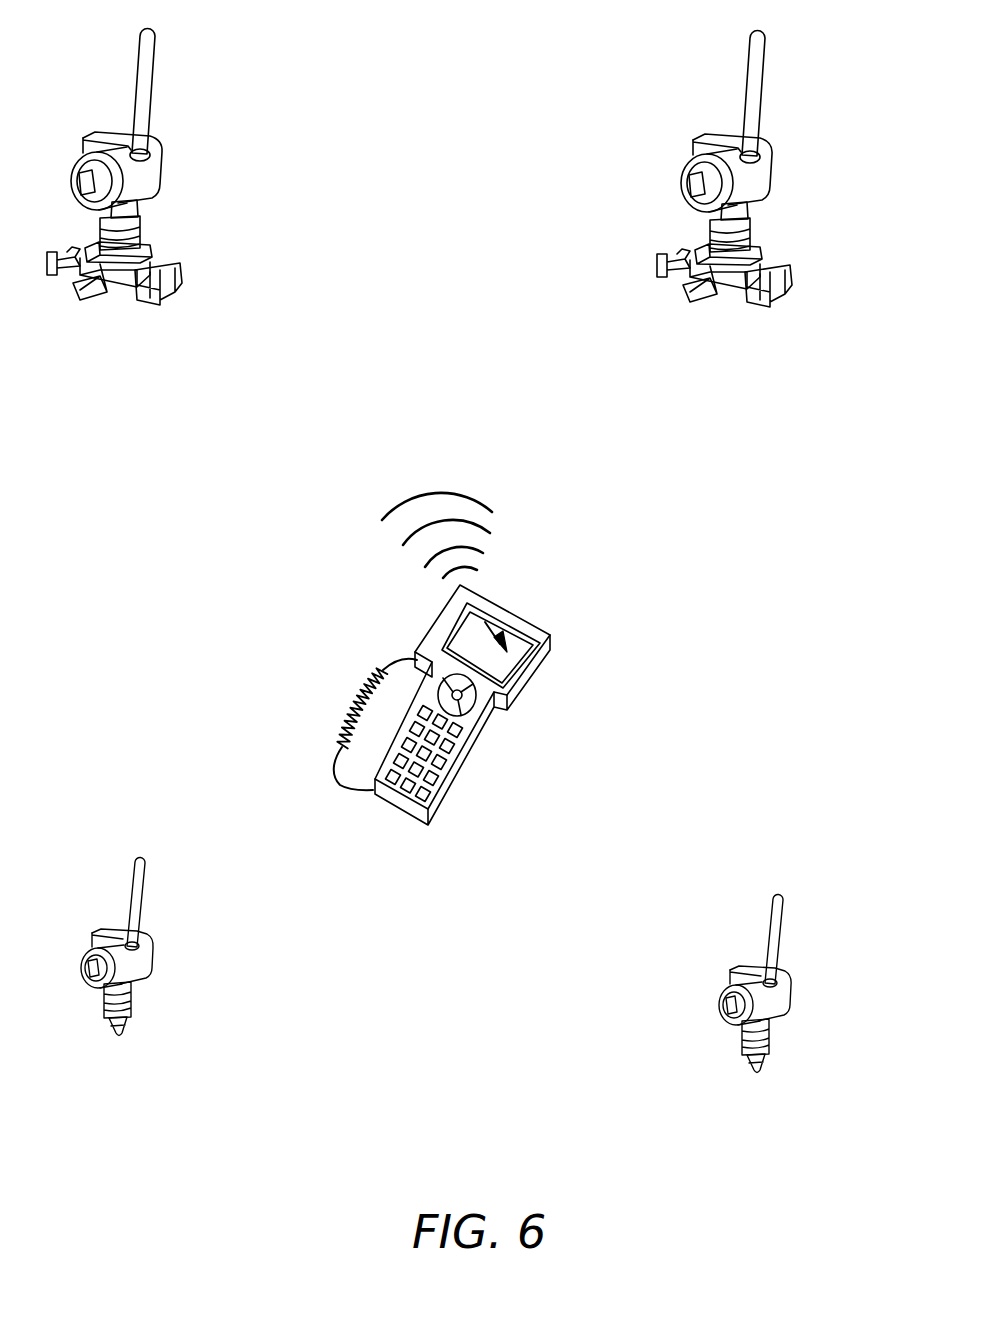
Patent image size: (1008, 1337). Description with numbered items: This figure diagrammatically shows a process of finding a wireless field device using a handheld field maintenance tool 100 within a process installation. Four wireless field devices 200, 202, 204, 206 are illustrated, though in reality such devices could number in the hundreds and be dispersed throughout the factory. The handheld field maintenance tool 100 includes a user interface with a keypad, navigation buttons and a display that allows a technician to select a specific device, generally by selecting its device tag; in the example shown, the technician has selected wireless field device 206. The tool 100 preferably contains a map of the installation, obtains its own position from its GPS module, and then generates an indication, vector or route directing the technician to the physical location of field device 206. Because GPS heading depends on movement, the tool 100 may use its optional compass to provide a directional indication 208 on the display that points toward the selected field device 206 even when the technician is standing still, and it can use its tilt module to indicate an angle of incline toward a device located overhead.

The handheld field maintenance tool 100 is at (530, 663).
The wireless field device 200 is at (147, 177).
The wireless field device 202 is at (768, 183).
The wireless field device 204 is at (138, 967).
The selected wireless field device 206 is at (728, 1018).
The directional indication 208 is at (503, 645).